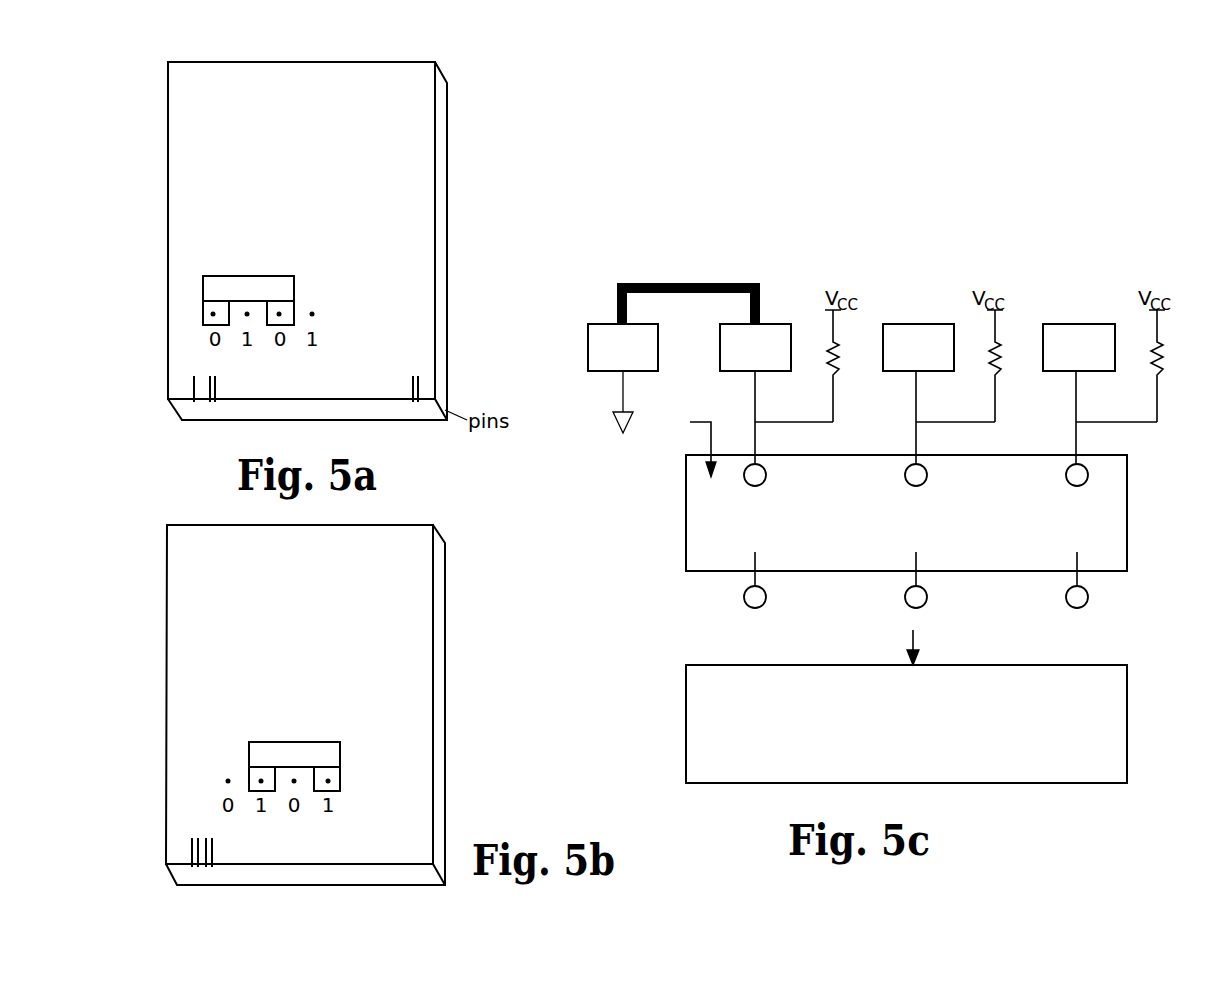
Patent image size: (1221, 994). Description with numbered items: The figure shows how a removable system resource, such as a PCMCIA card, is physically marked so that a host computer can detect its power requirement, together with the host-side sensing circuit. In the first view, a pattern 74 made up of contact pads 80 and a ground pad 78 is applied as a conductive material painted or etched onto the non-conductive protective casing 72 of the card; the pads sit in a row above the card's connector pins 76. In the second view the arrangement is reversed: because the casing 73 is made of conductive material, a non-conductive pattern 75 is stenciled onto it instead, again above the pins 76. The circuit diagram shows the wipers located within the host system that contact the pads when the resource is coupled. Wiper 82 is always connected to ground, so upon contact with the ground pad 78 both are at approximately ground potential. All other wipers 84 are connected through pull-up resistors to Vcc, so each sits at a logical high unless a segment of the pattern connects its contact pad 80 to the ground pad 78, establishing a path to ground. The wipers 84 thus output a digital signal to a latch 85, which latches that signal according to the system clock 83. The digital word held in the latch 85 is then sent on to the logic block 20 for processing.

In FIG. 5C, the logic block 20 is at (906, 724).
In FIG. 5A, the protective casing 72 is at (408, 123).
In FIG. 5B, the casing 73 is at (407, 586).
In FIG. 5A, the pattern 74 is at (203, 289).
In FIG. 5C, the pattern 74 is at (706, 285).
In FIG. 5B, the non-conductive pattern 75 is at (250, 756).
In FIG. 5A, the pins 76 is at (206, 404).
In FIG. 5B, the pins 76 is at (204, 868).
In FIG. 5A, the ground pad 78 is at (202, 314).
In FIG. 5A, the contact pads 80 is at (293, 310).
In FIG. 5C, the wiper 82 is at (605, 378).
In FIG. 5C, the system clock 83 is at (682, 425).
In FIG. 5C, the wipers 84 is at (1075, 324).
In FIG. 5C, the latch 85 is at (930, 531).